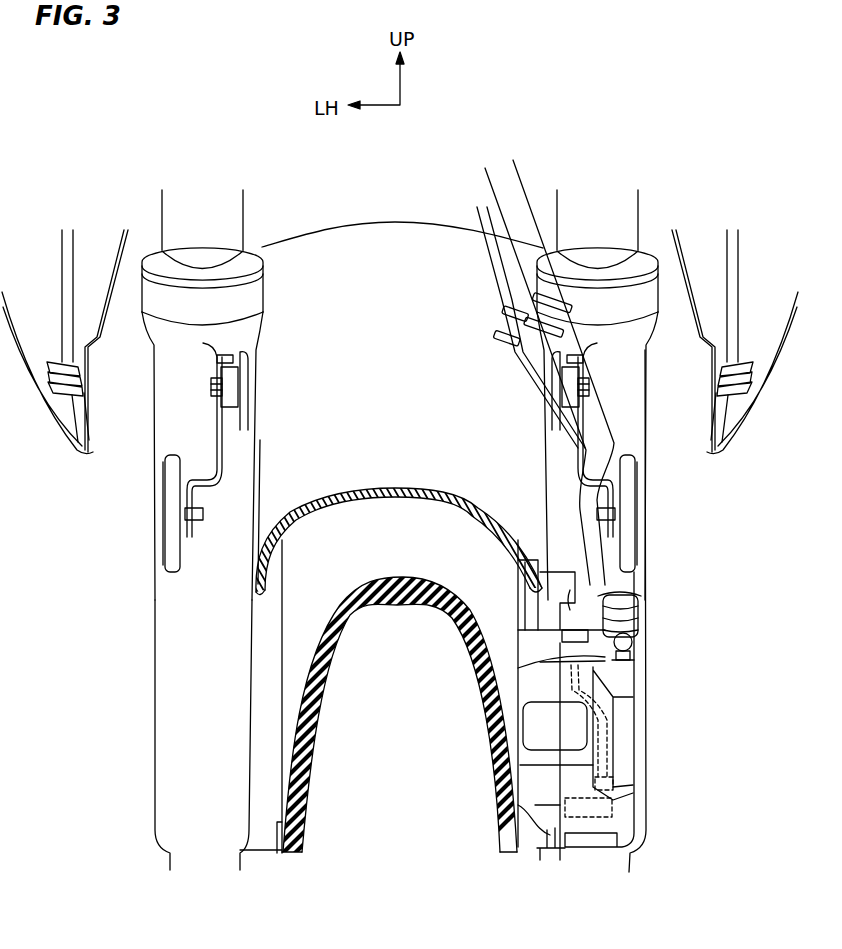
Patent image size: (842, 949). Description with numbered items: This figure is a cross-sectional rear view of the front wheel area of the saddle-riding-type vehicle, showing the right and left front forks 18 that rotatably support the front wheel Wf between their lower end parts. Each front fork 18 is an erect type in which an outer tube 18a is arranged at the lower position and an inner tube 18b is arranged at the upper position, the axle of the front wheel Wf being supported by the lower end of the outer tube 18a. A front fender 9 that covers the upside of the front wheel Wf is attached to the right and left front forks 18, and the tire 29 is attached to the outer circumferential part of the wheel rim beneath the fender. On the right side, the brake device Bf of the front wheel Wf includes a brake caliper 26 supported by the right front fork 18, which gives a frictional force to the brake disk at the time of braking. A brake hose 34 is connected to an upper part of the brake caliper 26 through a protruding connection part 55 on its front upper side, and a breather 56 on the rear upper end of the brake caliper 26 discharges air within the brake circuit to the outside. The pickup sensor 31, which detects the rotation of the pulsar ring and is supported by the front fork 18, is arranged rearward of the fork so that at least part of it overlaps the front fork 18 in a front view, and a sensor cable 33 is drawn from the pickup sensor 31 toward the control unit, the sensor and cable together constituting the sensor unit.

The front fender 9 is at (393, 232).
The front fork 18 is at (400, 529).
The outer tube 18a is at (156, 449).
The inner tube 18b is at (165, 209).
The brake hose 34 is at (600, 420).
The sensor cable 33 is at (597, 578).
The connection part 55 is at (625, 622).
The breather 56 is at (625, 660).
The brake device Bf is at (640, 735).
The brake caliper 26 is at (630, 700).
The pickup sensor 31 is at (580, 817).
The front wheel Wf is at (283, 648).
The tire 29 is at (298, 757).